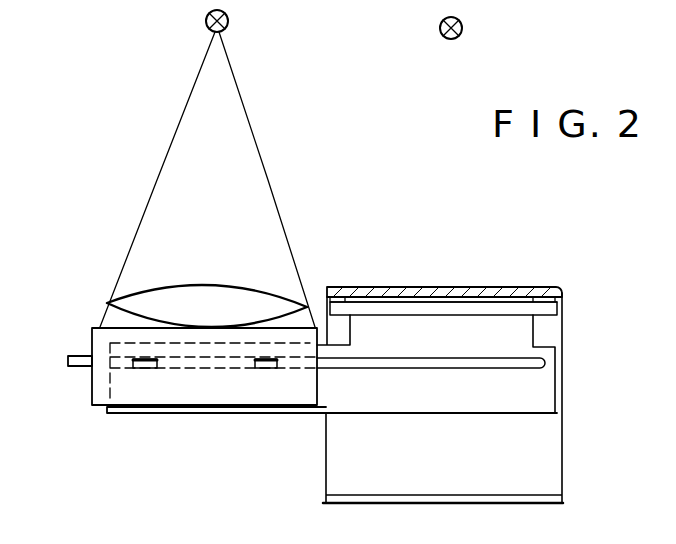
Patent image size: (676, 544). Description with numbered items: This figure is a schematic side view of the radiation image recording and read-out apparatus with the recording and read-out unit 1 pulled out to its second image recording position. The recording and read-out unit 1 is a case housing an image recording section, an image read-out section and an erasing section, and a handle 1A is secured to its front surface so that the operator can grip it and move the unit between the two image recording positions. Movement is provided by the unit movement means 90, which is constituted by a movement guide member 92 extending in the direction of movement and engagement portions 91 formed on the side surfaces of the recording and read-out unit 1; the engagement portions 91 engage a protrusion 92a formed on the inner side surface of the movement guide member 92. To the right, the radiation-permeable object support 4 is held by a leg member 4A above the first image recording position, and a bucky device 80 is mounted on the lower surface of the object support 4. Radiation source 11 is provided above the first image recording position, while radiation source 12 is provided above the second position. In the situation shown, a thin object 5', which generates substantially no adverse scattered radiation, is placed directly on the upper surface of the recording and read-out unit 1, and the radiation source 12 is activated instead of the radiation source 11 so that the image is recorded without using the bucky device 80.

The radiation source 12 is at (228, 22).
The radiation source 11 is at (462, 28).
The object 5' is at (207, 281).
The recording and read-out unit 1 is at (100, 410).
The handle 1A is at (72, 355).
The engagement portions 91 is at (145, 369).
The movement guide member 92 is at (323, 413).
The protrusion 92a is at (543, 363).
The unit movement means 90 is at (308, 453).
The radiation-permeable object support 4 is at (535, 287).
The bucky device 80 is at (555, 310).
The leg member 4A is at (558, 447).